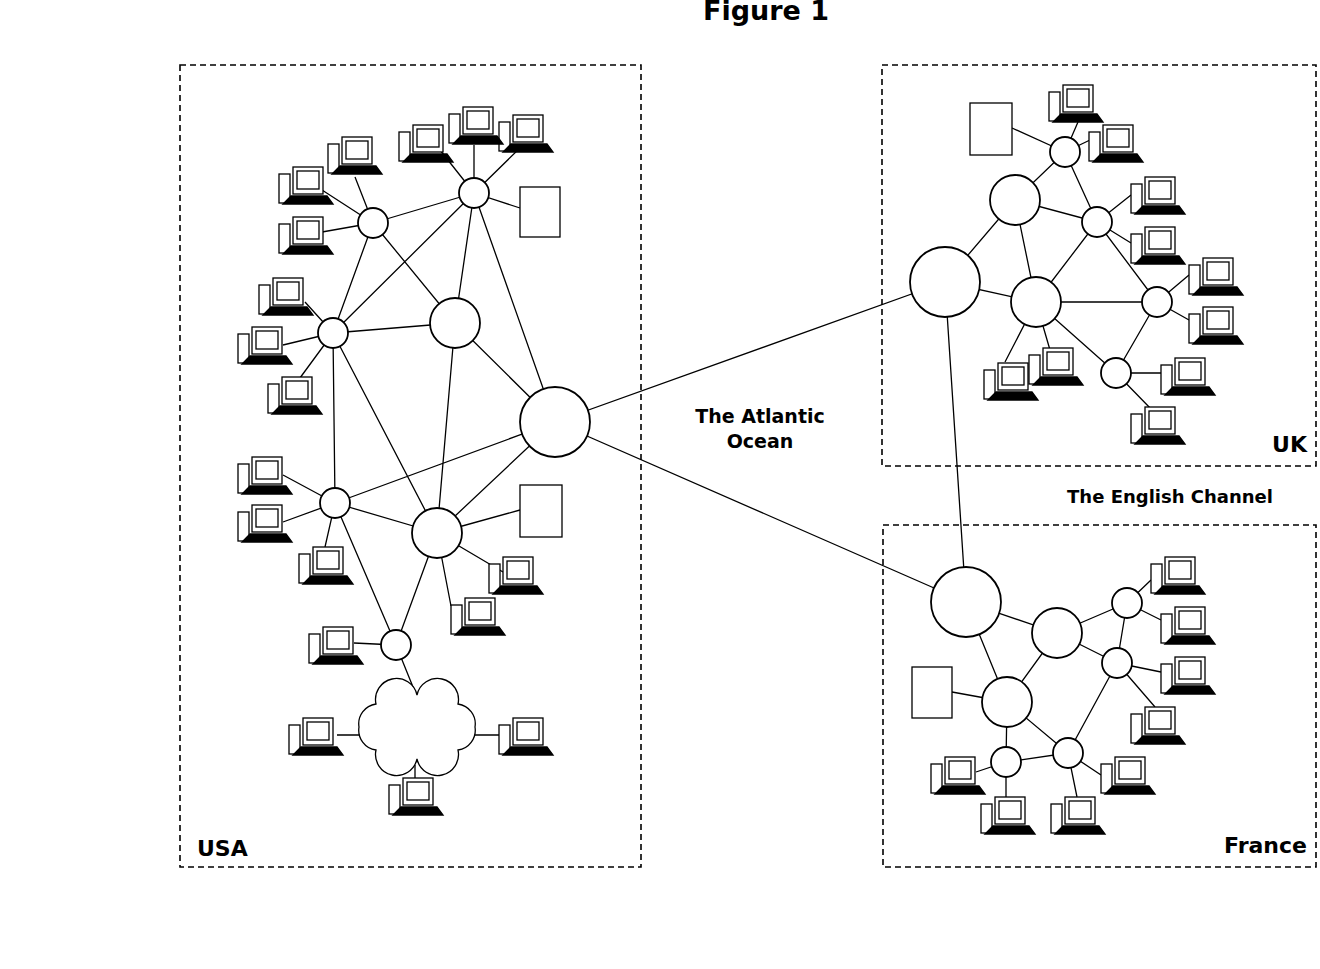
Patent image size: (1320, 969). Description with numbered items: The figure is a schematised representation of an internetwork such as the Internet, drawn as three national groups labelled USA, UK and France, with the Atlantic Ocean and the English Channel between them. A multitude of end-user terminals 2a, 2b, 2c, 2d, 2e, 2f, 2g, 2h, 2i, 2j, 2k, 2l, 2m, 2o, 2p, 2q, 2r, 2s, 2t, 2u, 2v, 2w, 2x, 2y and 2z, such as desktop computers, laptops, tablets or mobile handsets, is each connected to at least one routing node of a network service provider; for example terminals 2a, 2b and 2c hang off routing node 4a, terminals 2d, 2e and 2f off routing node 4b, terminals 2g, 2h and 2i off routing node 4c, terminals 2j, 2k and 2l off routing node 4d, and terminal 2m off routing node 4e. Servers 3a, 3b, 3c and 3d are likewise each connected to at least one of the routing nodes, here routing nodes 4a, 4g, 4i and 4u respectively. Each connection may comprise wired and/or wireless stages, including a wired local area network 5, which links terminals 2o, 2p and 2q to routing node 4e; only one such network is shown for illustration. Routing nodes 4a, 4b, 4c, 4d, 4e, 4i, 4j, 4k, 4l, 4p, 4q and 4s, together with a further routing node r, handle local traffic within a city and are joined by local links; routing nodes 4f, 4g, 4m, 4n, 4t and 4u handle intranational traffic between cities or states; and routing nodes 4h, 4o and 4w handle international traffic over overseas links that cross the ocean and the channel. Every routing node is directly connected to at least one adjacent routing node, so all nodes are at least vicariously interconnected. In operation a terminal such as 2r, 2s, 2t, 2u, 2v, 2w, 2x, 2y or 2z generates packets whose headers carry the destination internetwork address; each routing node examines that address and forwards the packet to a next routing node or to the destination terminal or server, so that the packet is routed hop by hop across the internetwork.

The end-user terminal 2a is at (526, 123).
The end-user terminal 2b is at (476, 114).
The end-user terminal 2c is at (426, 133).
The end-user terminal 2d is at (355, 144).
The end-user terminal 2e is at (306, 174).
The end-user terminal 2f is at (294, 235).
The end-user terminal 2g is at (274, 296).
The end-user terminal 2h is at (253, 345).
The end-user terminal 2i is at (286, 395).
The end-user terminal 2j is at (255, 475).
The end-user terminal 2k is at (254, 523).
The end-user terminal 2l is at (316, 567).
The end-user terminal 2m is at (321, 645).
The end-user terminal 2o is at (305, 736).
The end-user terminal 2p is at (405, 798).
The end-user terminal 2q is at (520, 748).
The end-user terminal 2r is at (489, 616).
The end-user terminal 2s is at (526, 575).
The end-user terminal 2t is at (1085, 103).
The end-user terminal 2u is at (1127, 142).
The end-user terminal 2v is at (1168, 193).
The end-user terminal 2w is at (1170, 243).
The end-user terminal 2x is at (1226, 275).
The end-user terminal 2y is at (1227, 325).
The end-user terminal 2z is at (1197, 376).
The server 3a is at (540, 212).
The server 3b is at (541, 511).
The server 3c is at (991, 129).
The server 3d is at (932, 692).
The routing node 4a is at (474, 193).
The routing node 4b is at (373, 223).
The routing node 4c is at (333, 333).
The routing node 4d is at (335, 503).
The routing node 4e is at (396, 645).
The routing node 4f is at (455, 323).
The routing node 4g is at (437, 533).
The routing node 4h is at (555, 422).
The routing node 4i is at (1065, 152).
The routing node 4j is at (1097, 222).
The routing node 4k is at (1157, 302).
The routing node 4l is at (1116, 373).
The routing node 4m is at (1015, 200).
The routing node 4n is at (1036, 302).
The routing node 4o is at (945, 282).
The routing node 4p is at (1127, 603).
The routing node 4q is at (1117, 663).
The routing node 4s is at (1006, 762).
The routing node 4t is at (1057, 633).
The routing node 4u is at (1007, 702).
The routing node 4w is at (966, 602).
The network node r is at (1068, 753).
The local area network 5 is at (417, 727).